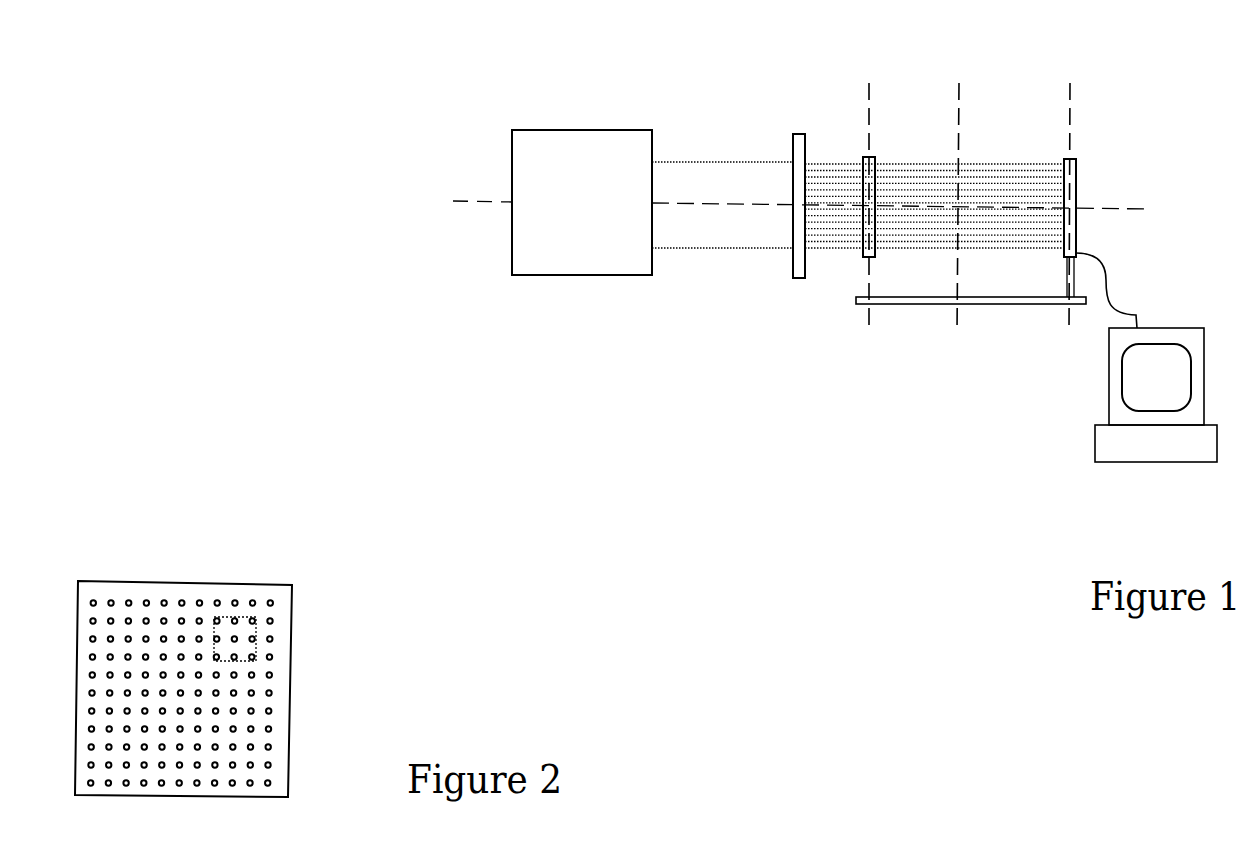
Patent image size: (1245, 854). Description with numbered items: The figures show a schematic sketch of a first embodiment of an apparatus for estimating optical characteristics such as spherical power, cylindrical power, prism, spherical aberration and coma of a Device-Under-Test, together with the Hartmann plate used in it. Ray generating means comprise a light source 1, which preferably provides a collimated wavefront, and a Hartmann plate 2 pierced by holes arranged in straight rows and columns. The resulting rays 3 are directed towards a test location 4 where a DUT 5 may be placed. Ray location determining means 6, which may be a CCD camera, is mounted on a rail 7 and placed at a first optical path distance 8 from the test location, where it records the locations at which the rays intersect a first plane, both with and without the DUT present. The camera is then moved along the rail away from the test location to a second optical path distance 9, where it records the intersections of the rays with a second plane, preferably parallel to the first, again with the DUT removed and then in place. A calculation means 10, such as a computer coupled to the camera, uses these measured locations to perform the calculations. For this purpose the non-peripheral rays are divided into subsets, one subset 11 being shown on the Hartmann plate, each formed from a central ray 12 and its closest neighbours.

In FIG. 1, the light source 1 is at (582, 129).
In FIG. 1, the Hartmann plate 2 is at (795, 134).
In FIG. 2, the Hartmann plate 2 is at (177, 581).
In FIG. 1, the rays 3 is at (833, 162).
In FIG. 1, the test location 4 is at (868, 132).
In FIG. 1, the DUT 5 is at (872, 157).
In FIG. 1, the ray location determining means 6 is at (1077, 168).
In FIG. 1, the rail 7 is at (980, 305).
In FIG. 1, the first optical path distance 8 is at (958, 152).
In FIG. 1, the second optical path distance 9 is at (1072, 132).
In FIG. 1, the calculation means 10 is at (1170, 328).
In FIG. 2, the subset 11 is at (243, 618).
In FIG. 2, the central ray 12 is at (237, 638).